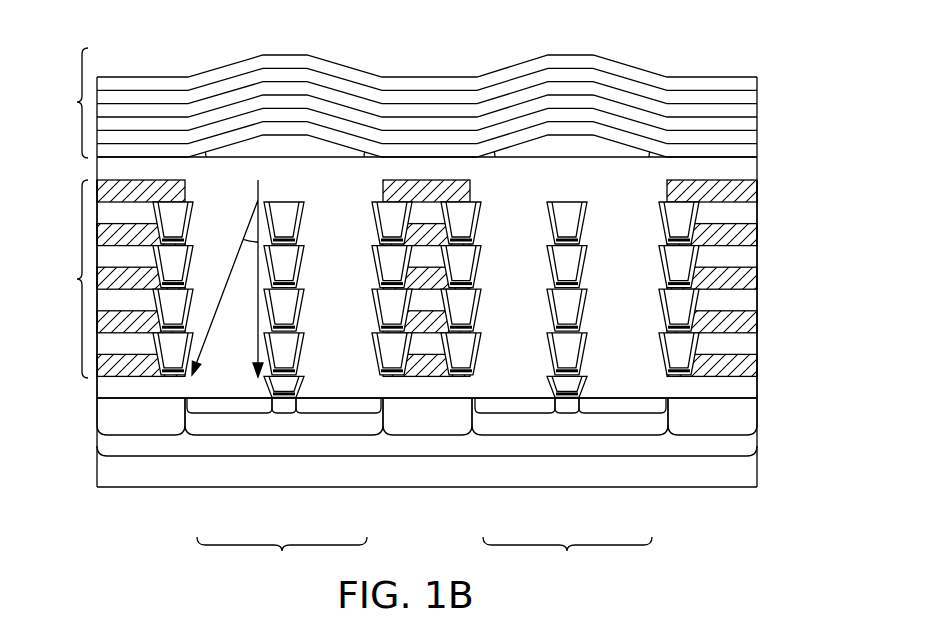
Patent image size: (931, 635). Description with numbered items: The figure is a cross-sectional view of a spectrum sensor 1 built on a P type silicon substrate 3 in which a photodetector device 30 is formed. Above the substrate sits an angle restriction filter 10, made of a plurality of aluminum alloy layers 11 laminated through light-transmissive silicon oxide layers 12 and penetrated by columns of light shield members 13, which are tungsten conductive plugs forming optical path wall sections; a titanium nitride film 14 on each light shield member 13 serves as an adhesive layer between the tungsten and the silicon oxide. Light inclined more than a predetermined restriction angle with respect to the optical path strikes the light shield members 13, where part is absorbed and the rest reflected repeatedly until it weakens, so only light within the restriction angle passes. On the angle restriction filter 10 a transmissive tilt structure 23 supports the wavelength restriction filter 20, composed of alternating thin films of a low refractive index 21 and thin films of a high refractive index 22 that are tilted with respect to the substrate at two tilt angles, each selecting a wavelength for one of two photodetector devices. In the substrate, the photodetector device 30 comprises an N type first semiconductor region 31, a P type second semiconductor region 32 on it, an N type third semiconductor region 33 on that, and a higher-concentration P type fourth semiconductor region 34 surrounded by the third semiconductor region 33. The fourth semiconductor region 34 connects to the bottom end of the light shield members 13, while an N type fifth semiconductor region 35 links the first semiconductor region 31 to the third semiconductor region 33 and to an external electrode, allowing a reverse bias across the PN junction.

The spectrum sensor 1 is at (418, 58).
The P type silicon substrate 3 is at (748, 468).
The angle restriction filter 10 is at (153, 279).
The aluminum alloy layers 11 is at (748, 190).
The silicon oxide layers 12 is at (748, 210).
The light shield members 13 is at (381, 215).
The titanium nitride film 14 is at (381, 260).
The wavelength restriction filter 20 is at (348, 117).
The thin films of a low refractive index 21 is at (750, 79).
The thin films of a high refractive index 22 is at (750, 92).
The tilt structure 23 is at (256, 147).
The photodetector device 30 is at (424, 556).
The first semiconductor region 31 is at (748, 442).
The second semiconductor region 32 is at (210, 420).
The third semiconductor region 33 is at (253, 405).
The fourth semiconductor region 34 is at (290, 405).
The fifth semiconductor region 35 is at (142, 420).